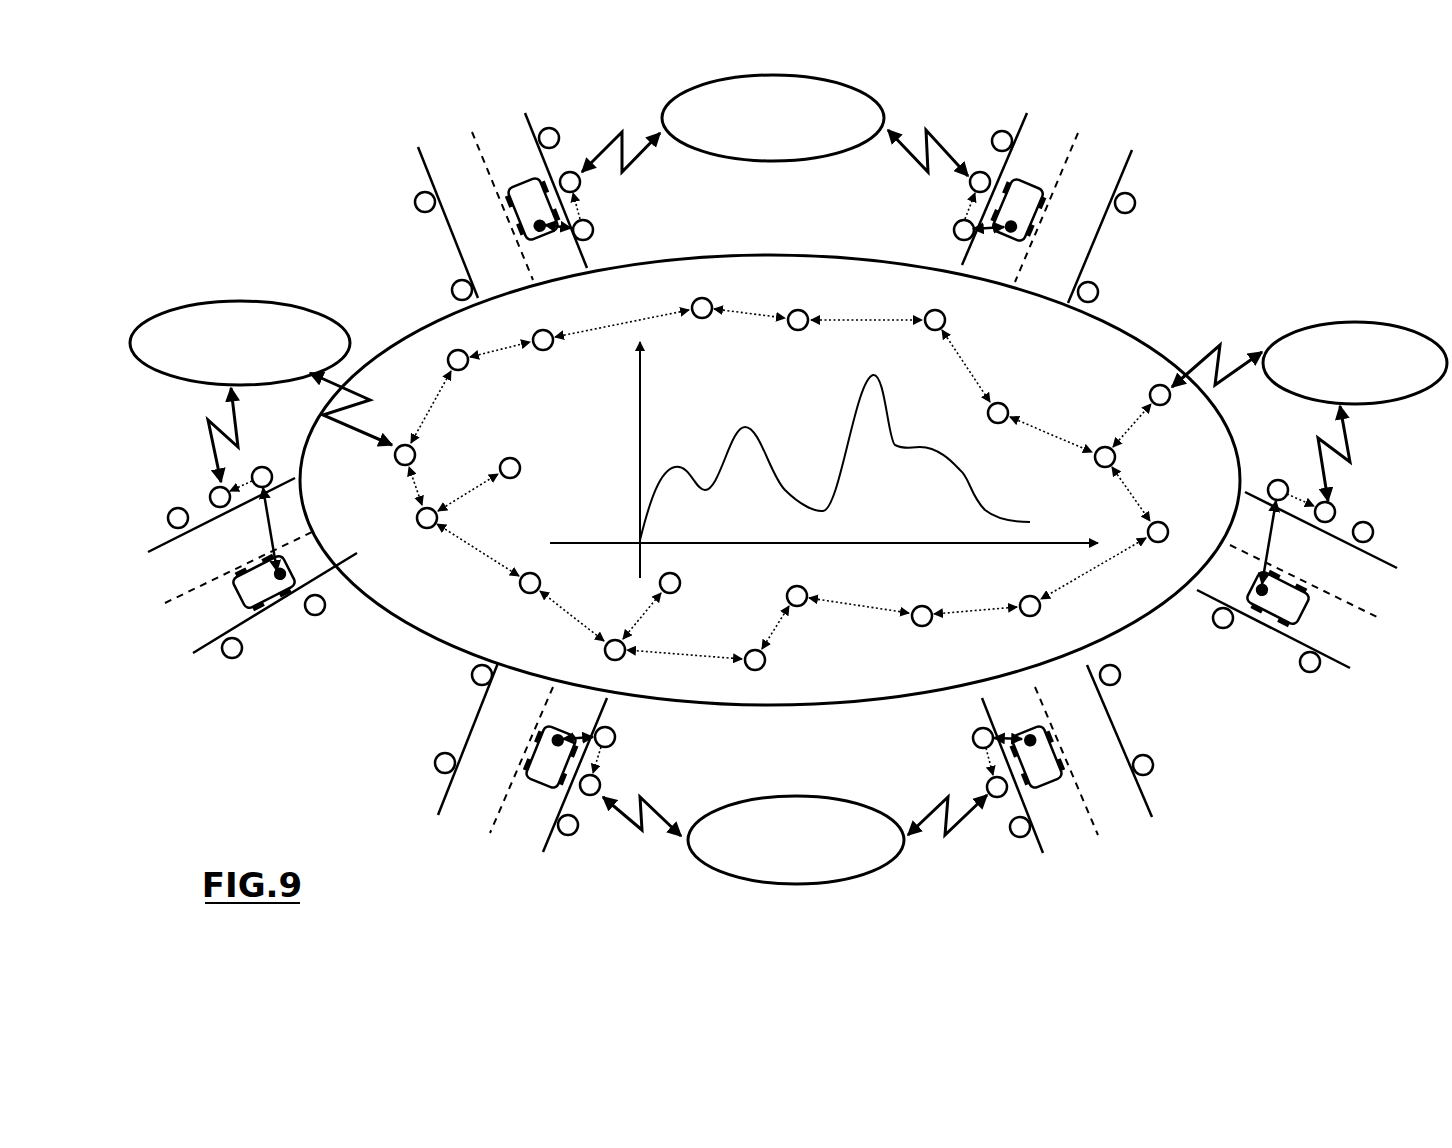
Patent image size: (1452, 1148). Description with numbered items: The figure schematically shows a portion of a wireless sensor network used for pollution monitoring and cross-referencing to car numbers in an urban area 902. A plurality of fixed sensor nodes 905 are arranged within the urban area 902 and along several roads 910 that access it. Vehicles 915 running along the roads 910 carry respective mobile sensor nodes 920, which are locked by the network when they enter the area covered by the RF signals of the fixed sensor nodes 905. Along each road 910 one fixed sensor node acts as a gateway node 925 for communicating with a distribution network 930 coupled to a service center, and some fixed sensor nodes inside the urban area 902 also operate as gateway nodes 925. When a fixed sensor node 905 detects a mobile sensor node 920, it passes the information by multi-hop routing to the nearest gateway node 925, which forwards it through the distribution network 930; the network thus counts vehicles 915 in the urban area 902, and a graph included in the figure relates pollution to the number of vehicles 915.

The urban area 902 is at (400, 341).
The fixed sensor node 905 is at (557, 135).
The road 910 is at (420, 162).
The vehicle 915 is at (505, 185).
The mobile sensor node 920 is at (530, 243).
The gateway node 925 is at (582, 190).
The distribution network 930 is at (775, 162).